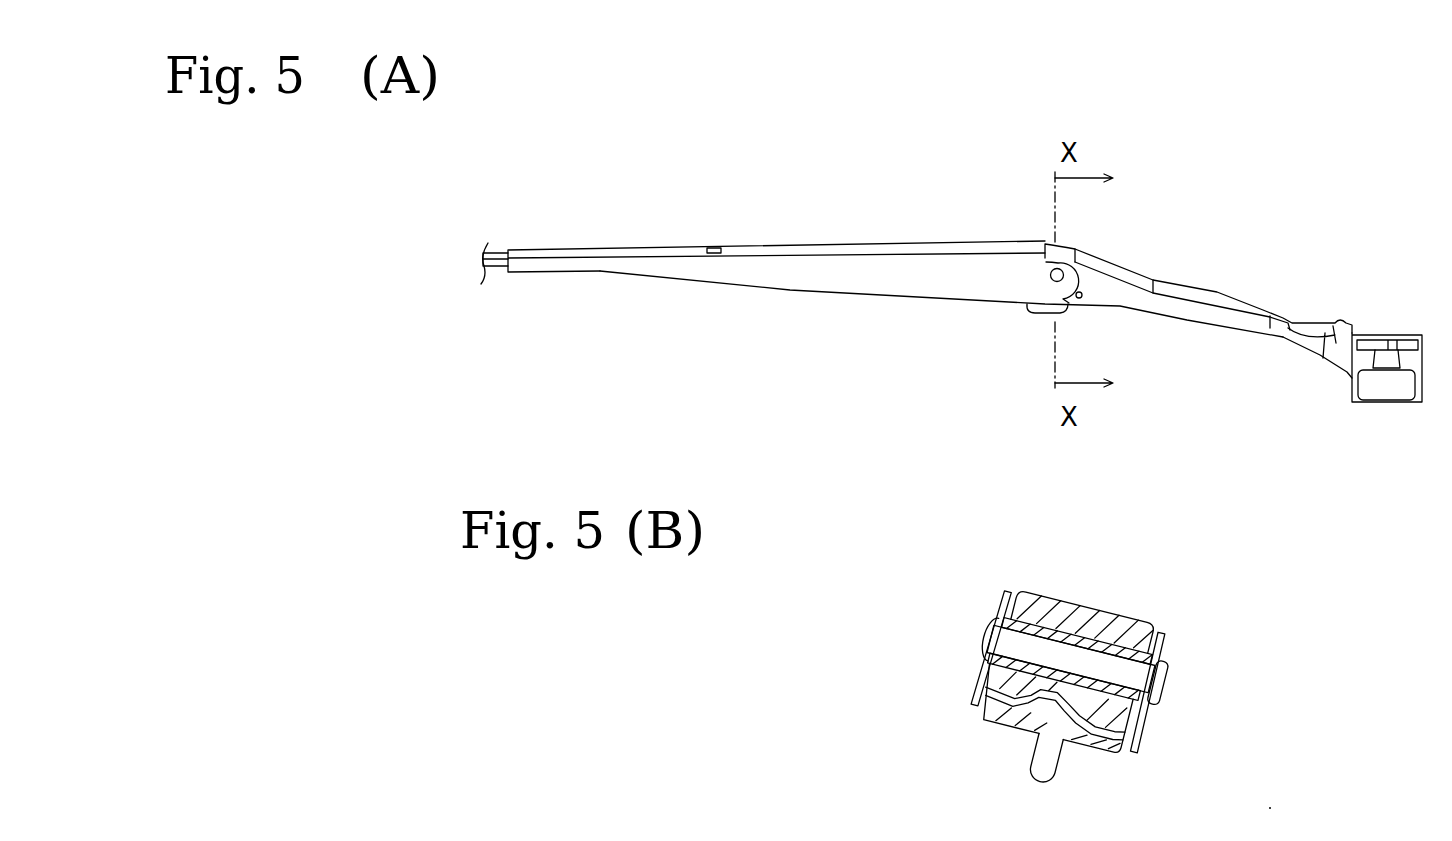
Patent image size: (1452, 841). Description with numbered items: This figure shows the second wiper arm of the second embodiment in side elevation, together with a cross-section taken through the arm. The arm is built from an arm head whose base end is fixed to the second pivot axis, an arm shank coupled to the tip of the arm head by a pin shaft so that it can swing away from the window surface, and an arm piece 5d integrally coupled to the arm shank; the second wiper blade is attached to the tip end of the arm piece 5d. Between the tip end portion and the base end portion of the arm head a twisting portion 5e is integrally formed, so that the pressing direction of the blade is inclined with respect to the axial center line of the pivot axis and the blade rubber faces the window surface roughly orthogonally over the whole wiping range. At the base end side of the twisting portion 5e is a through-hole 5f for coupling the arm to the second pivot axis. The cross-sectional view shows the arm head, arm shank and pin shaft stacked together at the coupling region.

The arm piece 5d is at (502, 250).
The twisting portion 5e is at (1235, 292).
The through-hole 5f is at (1414, 372).